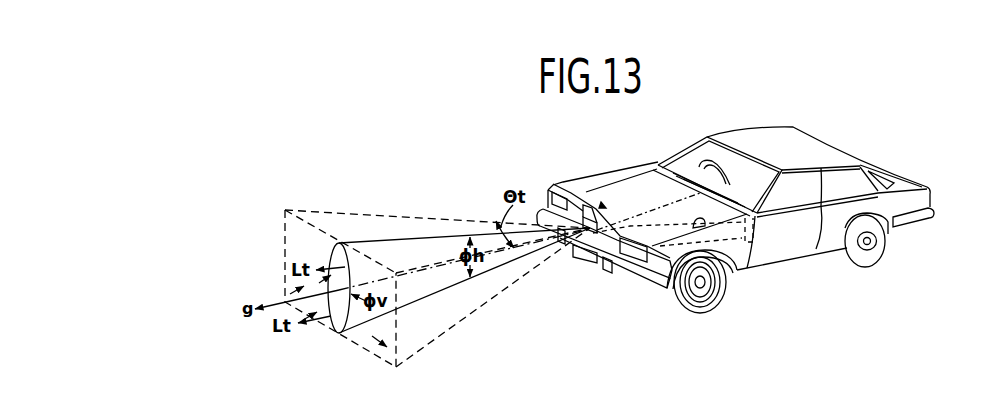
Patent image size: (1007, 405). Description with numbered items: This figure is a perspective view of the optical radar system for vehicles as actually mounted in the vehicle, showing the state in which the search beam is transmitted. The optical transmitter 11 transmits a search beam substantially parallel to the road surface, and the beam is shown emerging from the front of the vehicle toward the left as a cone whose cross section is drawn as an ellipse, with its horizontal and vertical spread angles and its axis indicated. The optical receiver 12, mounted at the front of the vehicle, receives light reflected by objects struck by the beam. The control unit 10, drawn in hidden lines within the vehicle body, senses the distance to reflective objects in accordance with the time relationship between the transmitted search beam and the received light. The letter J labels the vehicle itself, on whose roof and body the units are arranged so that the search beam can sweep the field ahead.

The control unit 10 is at (754, 231).
The optical transmitter 11 is at (606, 206).
The optical receiver 12 is at (583, 198).
The vehicle body J is at (755, 128).